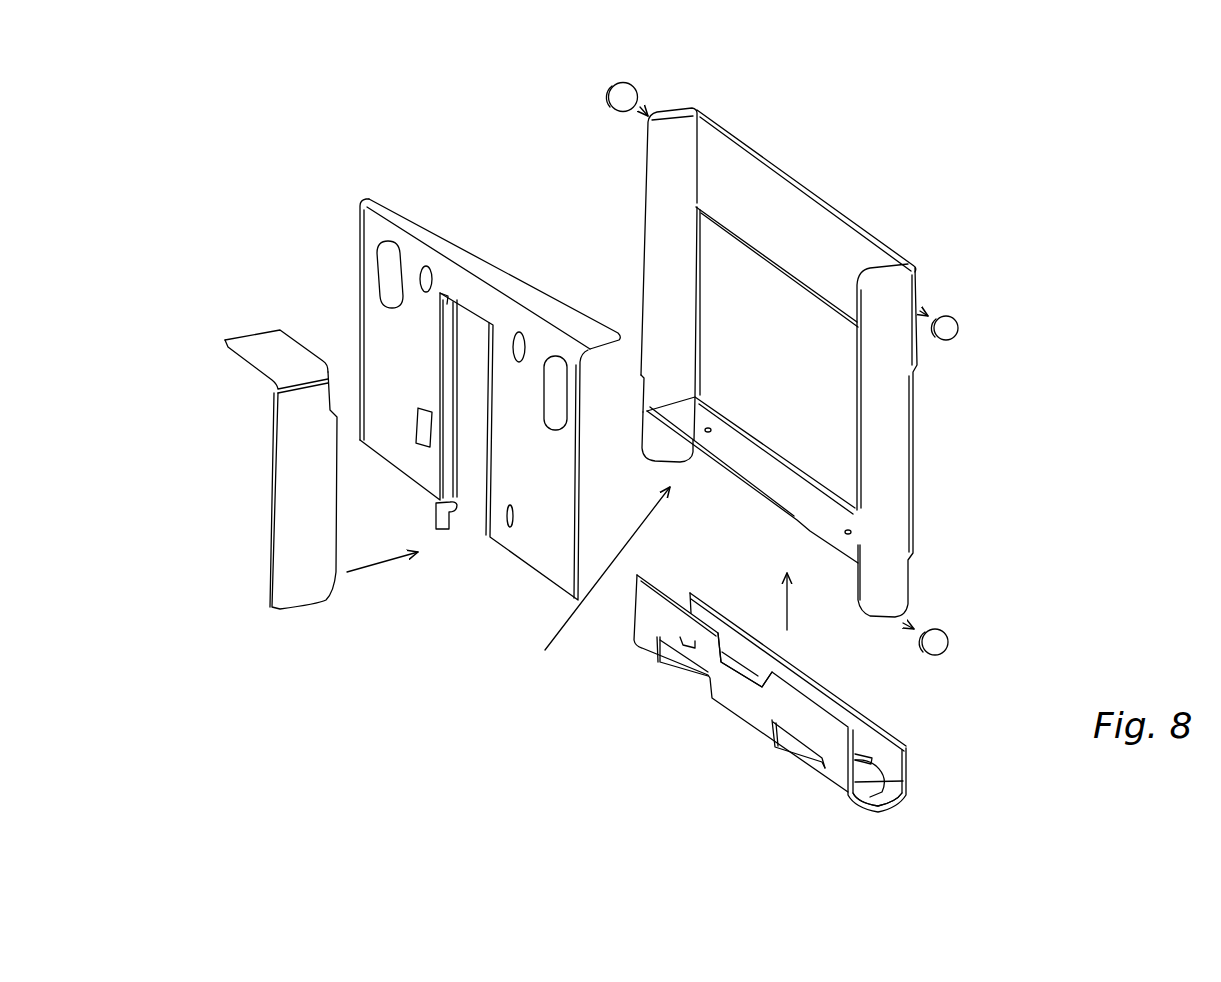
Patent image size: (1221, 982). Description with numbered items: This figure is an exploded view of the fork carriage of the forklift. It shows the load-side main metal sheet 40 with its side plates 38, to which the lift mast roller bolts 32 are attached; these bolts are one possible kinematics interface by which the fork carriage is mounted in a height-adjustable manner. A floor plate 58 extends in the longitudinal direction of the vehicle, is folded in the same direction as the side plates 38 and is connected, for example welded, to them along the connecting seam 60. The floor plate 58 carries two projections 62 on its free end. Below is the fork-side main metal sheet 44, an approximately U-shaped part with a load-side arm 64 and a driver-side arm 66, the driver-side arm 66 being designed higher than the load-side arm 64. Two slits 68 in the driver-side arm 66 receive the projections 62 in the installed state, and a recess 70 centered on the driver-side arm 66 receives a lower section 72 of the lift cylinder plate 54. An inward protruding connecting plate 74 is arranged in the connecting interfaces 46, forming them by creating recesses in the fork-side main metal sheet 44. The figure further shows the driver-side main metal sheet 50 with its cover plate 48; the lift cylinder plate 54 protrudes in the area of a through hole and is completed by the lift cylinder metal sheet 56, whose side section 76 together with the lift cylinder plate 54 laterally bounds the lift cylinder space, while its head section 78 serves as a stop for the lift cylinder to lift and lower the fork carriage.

The lift mast roller bolts 32 is at (607, 90).
The side plates 38 is at (632, 245).
The load-side main metal sheet 40 is at (781, 369).
The fork-side main metal sheet 44 is at (784, 721).
The connecting interfaces 46 is at (792, 762).
The cover plate 48 is at (403, 200).
The driver-side main metal sheet 50 is at (483, 402).
The lift cylinder plate 54 is at (477, 422).
The lift cylinder metal sheet 56 is at (259, 450).
The floor plate 58 is at (508, 582).
The connecting seam 60 is at (663, 403).
The projections 62 is at (798, 530).
The load-side arm 64 is at (920, 760).
The driver-side arm 66 is at (845, 758).
The slits 68 is at (798, 722).
The recess 70 is at (723, 651).
The lower section 72 is at (448, 512).
The connecting plate 74 is at (860, 752).
The side section 76 is at (293, 529).
The head section 78 is at (263, 349).